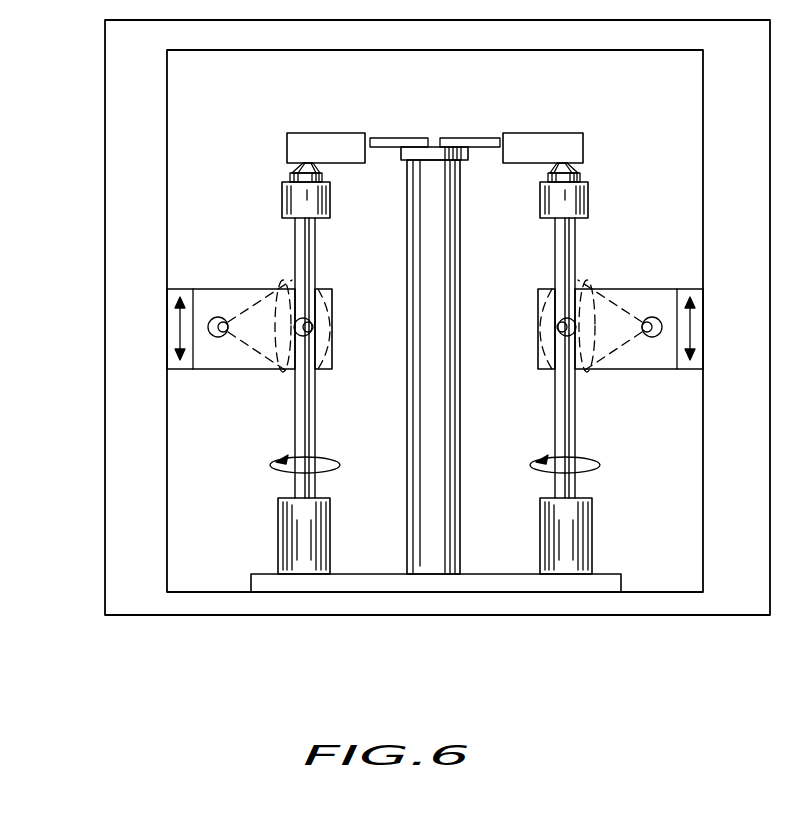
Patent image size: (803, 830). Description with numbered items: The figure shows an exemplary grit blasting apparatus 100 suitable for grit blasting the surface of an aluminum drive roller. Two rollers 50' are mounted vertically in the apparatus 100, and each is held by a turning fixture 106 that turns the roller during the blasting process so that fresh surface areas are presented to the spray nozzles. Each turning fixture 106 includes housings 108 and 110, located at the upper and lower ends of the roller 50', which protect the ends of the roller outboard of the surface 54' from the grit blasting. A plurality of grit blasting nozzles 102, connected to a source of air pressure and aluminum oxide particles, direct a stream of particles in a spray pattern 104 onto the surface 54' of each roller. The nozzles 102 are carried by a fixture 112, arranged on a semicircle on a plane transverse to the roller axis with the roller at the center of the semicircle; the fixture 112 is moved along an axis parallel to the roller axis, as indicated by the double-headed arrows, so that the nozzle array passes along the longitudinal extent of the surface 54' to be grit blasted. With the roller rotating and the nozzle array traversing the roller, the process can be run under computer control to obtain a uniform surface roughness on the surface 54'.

The grit blasting apparatus 100 is at (84, 227).
The grit blasting nozzles 102 is at (217, 317).
The spray pattern 104 is at (258, 300).
The turning fixtures 106 is at (318, 166).
The housing 108 is at (282, 197).
The roller 50' is at (435, 358).
The roller surface 54' is at (435, 423).
The housing 110 is at (278, 556).
The fixture 112 is at (183, 370).